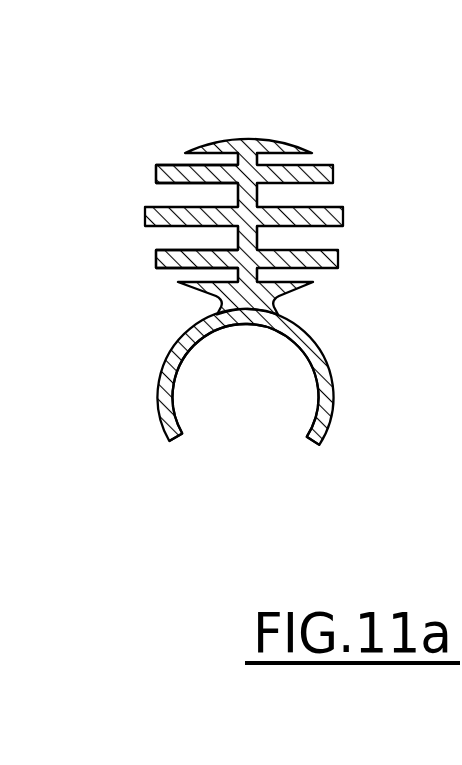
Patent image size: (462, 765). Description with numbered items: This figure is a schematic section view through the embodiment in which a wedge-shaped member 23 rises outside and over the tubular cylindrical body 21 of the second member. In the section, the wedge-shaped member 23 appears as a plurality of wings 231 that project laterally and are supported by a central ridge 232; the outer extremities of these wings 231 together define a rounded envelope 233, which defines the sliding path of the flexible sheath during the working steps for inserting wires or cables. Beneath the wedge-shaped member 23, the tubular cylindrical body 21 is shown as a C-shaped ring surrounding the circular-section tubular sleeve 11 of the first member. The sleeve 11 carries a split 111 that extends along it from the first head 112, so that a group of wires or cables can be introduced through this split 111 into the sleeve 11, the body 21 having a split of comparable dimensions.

The wedge-shaped member 23 is at (350, 207).
The wings 231 is at (136, 179).
The ridge 232 is at (250, 178).
The rounded envelope 233 is at (153, 246).
The tubular cylindrical body 21 is at (323, 348).
The tubular sleeve 11 is at (180, 362).
The split 111 is at (215, 427).
The first head 112 is at (259, 420).